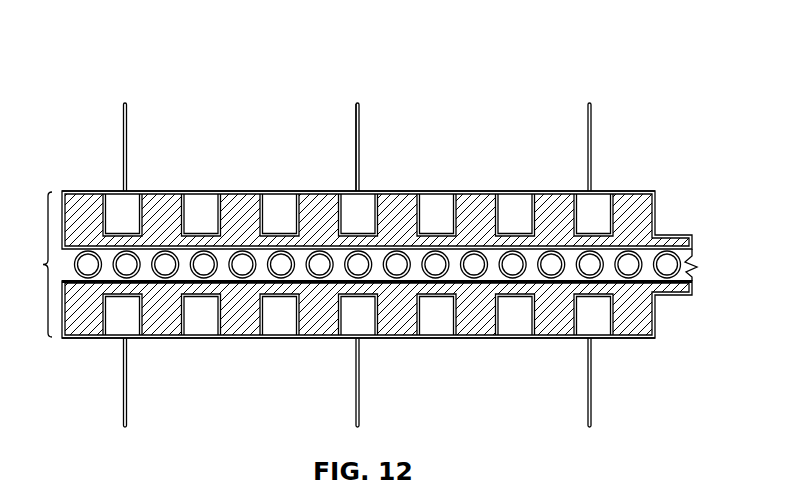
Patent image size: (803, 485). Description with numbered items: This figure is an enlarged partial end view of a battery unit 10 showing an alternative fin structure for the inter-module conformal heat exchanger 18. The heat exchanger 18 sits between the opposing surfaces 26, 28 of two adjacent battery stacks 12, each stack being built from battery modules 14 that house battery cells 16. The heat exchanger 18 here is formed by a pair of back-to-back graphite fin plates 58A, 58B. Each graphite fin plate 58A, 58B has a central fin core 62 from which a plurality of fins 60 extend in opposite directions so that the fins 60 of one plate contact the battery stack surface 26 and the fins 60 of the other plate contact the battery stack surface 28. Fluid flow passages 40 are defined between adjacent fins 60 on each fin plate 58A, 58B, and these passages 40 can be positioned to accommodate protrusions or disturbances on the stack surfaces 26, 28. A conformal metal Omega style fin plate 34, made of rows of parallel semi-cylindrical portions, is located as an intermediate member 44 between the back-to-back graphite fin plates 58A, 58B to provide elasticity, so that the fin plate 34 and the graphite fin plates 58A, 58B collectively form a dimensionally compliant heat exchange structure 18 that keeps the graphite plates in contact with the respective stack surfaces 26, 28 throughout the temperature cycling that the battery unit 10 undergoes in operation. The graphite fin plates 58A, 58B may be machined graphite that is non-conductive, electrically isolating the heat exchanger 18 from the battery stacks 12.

The battery unit 10 is at (645, 122).
The battery stacks 12 is at (59, 102).
The battery modules 14 is at (328, 117).
The battery cells 16 is at (247, 155).
The heat exchanger 18 is at (33, 264).
The battery stack surface 26 is at (197, 213).
The battery stack surface 28 is at (194, 322).
The Omega fin plate 34 is at (687, 268).
The fluid flow passages 40 is at (371, 223).
The intermediate member 44 is at (701, 253).
The graphite fin plate 58A is at (657, 212).
The graphite fin plate 58B is at (657, 318).
The fins 60 is at (476, 212).
The central fin core 62 is at (518, 240).